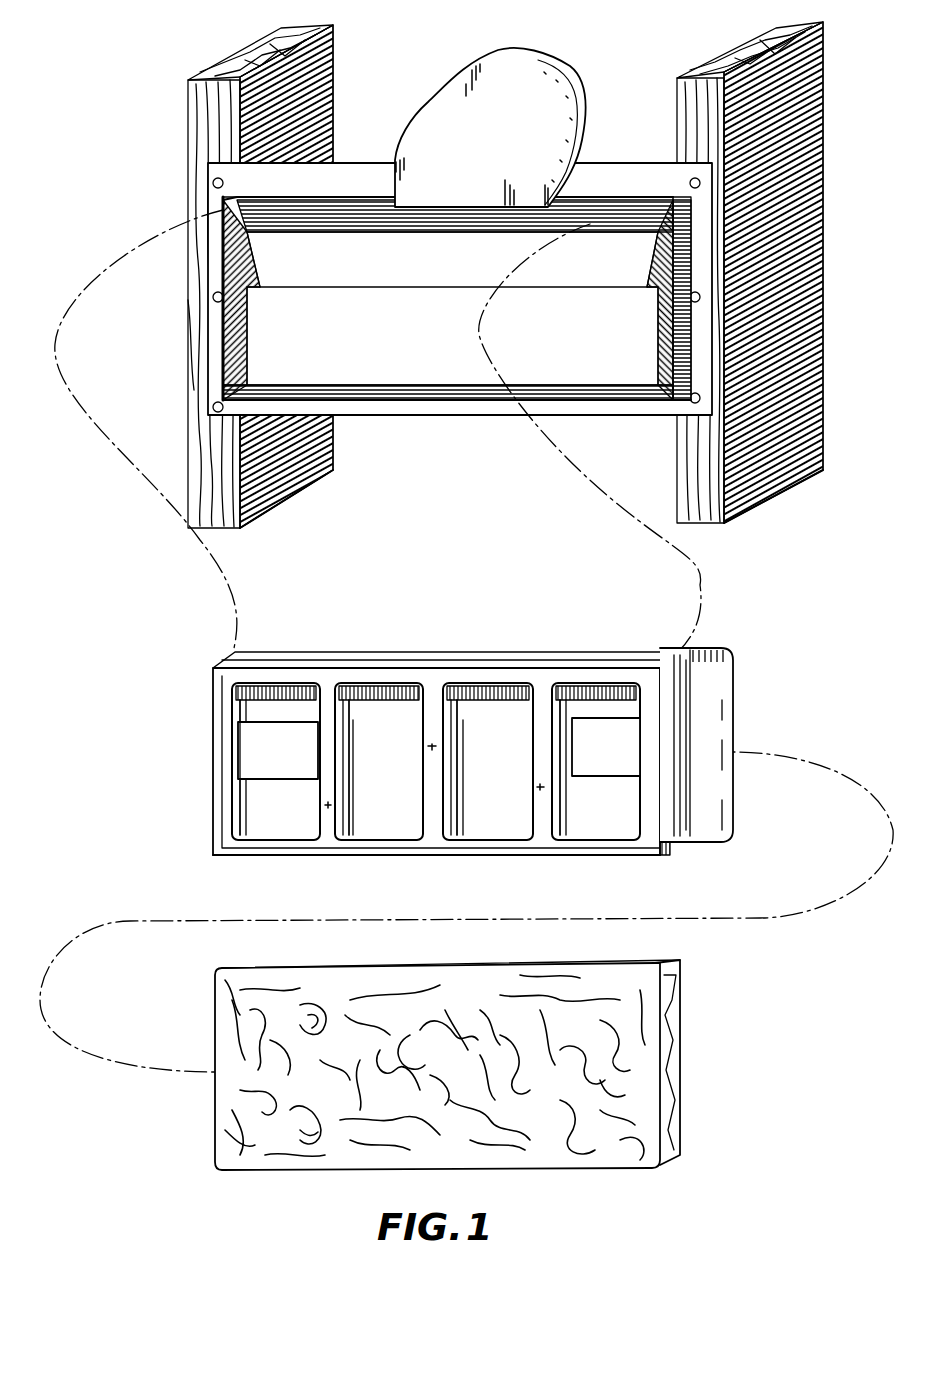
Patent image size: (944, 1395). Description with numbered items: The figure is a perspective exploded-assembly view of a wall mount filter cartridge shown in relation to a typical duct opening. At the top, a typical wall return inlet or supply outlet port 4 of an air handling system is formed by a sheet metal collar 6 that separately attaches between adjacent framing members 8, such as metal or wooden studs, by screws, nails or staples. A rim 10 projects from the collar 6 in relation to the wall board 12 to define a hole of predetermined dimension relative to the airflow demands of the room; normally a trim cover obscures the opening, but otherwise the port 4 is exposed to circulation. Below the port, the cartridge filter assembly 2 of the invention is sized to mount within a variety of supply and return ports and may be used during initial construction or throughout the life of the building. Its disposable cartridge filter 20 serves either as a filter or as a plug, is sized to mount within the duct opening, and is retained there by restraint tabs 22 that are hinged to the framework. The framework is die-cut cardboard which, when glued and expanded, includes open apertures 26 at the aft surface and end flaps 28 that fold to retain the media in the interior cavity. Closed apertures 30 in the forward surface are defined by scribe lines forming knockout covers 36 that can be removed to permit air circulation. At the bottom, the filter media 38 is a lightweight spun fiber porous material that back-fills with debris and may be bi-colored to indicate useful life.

The filter assembly 2 is at (446, 725).
The wall supply or return port 4 is at (504, 266).
The sheet metal collar 6 is at (406, 289).
The framing members 8 is at (337, 45).
The rim 10 is at (373, 390).
The wall board 12 is at (518, 68).
The disposable cartridge filter 20 is at (363, 725).
The restraint tabs 22 is at (282, 810).
The open apertures 26 is at (580, 680).
The end flaps 28 is at (733, 812).
The closed apertures 30 is at (238, 752).
The knockout covers 36 is at (487, 725).
The filter media 38 is at (673, 1068).